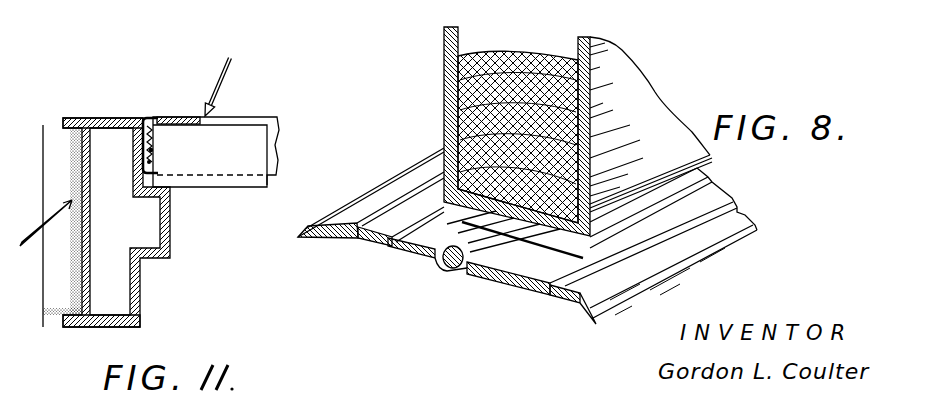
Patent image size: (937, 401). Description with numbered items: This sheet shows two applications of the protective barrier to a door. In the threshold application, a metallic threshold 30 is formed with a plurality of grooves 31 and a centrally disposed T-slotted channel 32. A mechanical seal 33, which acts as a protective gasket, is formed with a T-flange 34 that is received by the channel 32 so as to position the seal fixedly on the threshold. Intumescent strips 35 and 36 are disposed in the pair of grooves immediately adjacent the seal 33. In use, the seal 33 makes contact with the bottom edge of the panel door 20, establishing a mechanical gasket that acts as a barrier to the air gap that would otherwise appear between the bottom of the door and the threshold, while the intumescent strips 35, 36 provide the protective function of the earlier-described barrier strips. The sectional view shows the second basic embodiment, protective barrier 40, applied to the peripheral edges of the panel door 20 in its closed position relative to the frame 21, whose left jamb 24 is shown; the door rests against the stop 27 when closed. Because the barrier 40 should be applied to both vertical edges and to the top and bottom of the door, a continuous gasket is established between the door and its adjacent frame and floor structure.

In FIG. 11, the panel door 20 is at (233, 120).
In FIG. 8, the panel door 20 is at (637, 90).
In FIG. 11, the frame 21 is at (151, 273).
In FIG. 11, the left jamb 24 is at (88, 119).
In FIG. 11, the stop 27 is at (173, 222).
In FIG. 11, the protective barrier 40 is at (157, 113).
In FIG. 8, the metallic threshold 30 is at (437, 162).
In FIG. 8, the grooves 31 is at (347, 233).
In FIG. 8, the T-slotted channel 32 is at (466, 268).
In FIG. 8, the mechanical seal 33 is at (590, 246).
In FIG. 8, the T-flange 34 is at (447, 263).
In FIG. 8, the intumescent strip 35 is at (385, 243).
In FIG. 8, the intumescent strip 36 is at (540, 247).